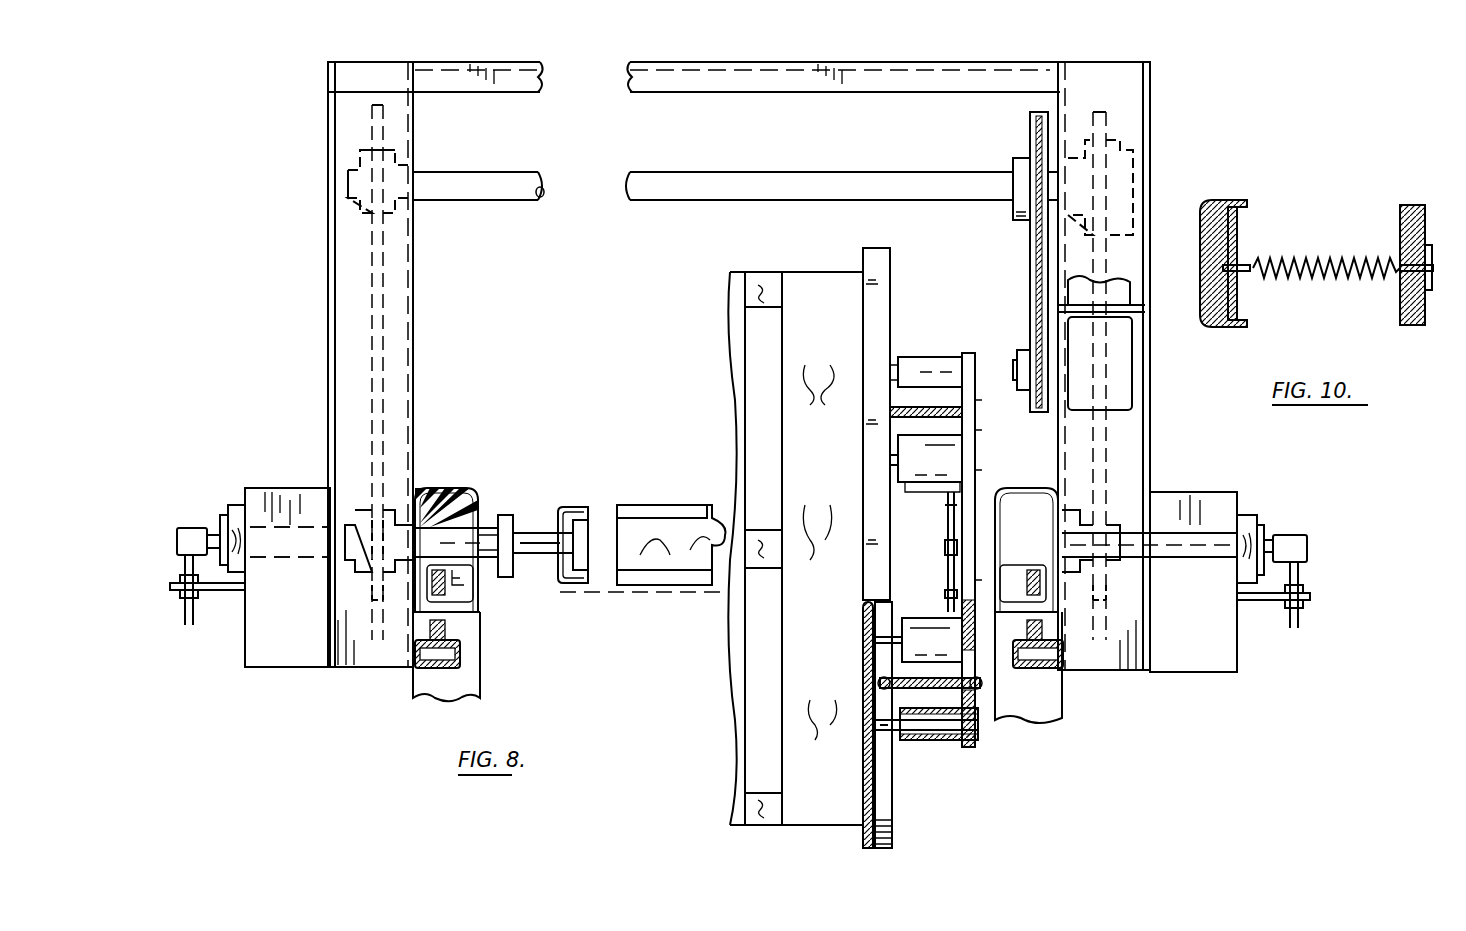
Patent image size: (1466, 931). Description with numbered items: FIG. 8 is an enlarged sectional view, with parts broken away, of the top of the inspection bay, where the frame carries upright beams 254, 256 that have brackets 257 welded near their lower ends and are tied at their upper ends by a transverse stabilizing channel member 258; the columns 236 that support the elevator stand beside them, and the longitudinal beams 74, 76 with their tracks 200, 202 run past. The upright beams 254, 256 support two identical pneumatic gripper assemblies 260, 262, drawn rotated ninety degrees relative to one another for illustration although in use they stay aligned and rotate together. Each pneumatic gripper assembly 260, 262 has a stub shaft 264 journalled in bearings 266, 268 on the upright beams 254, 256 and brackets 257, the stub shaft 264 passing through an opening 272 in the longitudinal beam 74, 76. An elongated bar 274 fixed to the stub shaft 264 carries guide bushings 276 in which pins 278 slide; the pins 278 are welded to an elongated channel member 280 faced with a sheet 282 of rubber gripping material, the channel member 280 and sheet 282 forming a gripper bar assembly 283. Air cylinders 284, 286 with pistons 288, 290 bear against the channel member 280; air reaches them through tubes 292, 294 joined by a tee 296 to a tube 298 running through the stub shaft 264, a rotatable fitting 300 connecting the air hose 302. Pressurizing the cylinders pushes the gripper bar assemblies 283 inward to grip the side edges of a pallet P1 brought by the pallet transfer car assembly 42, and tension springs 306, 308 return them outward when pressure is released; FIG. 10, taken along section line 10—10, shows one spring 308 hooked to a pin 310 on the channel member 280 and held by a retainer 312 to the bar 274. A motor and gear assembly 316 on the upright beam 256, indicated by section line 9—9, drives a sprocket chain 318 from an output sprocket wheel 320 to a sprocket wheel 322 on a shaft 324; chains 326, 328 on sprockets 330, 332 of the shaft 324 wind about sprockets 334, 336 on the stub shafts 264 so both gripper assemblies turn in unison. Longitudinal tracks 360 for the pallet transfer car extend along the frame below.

In FIG. 8, the section line 9— 9 is at (863, 70).
In FIG. 8, the section line 10— 10 is at (820, 682).
In FIG. 8, the pallet transfer car assembly 42 is at (636, 600).
In FIG. 8, the horizontally-extending beam 74 is at (470, 490).
In FIG. 8, the horizontally-extending beam 76 is at (1035, 490).
In FIG. 8, the track 200 is at (430, 612).
In FIG. 8, the track 202 is at (1042, 588).
In FIG. 8, the column 236 is at (432, 698).
In FIG. 8, the upright beam 254 is at (340, 320).
In FIG. 8, the upright beam 256 is at (1150, 435).
In FIG. 8, the bracket 257 is at (275, 490).
In FIG. 8, the transverse stabilizing channel member 258 is at (632, 72).
In FIG. 8, the pneumatic gripper assembly 260 is at (530, 486).
In FIG. 8, the pneumatic gripper assembly 262 is at (968, 342).
In FIG. 8, the stub shaft 264 is at (282, 563).
In FIG. 8, the bearing 266 is at (236, 505).
In FIG. 8, the bearing 268 is at (398, 485).
In FIG. 8, the opening 272 is at (476, 510).
In FIG. 8, the elongated bar 274 is at (505, 560).
In FIG. 10, the elongated bar 274 is at (1420, 205).
In FIG. 8, the guide bushing 276 is at (527, 560).
In FIG. 8, the pin 278 is at (890, 360).
In FIG. 8, the elongated channel member 280 is at (548, 560).
In FIG. 10, the elongated channel member 280 is at (1247, 212).
In FIG. 8, the sheet of gripping material 282 is at (572, 506).
In FIG. 10, the sheet of gripping material 282 is at (1205, 205).
In FIG. 8, the gripper bar assembly 283 is at (592, 507).
In FIG. 8, the air cylinder 284 is at (900, 470).
In FIG. 8, the air cylinder 286 is at (920, 620).
In FIG. 8, the piston 288 is at (893, 462).
In FIG. 8, the piston 290 is at (878, 640).
In FIG. 8, the tube 292 is at (948, 518).
In FIG. 8, the tube 294 is at (948, 590).
In FIG. 8, the tee 296 is at (935, 550).
In FIG. 8, the tube 298 is at (1195, 545).
In FIG. 8, the fitting 300 is at (195, 528).
In FIG. 8, the air hose 302 is at (178, 585).
In FIG. 8, the tension spring 306 is at (888, 412).
In FIG. 8, the tension spring 308 is at (880, 680).
In FIG. 10, the tension spring 308 is at (1330, 282).
In FIG. 10, the pin 310 is at (1240, 305).
In FIG. 10, the retainer 312 is at (1432, 292).
In FIG. 8, the motor and gear assembly 316 is at (1132, 360).
In FIG. 8, the sprocket chain 318 is at (1030, 240).
In FIG. 8, the output sprocket wheel 320 is at (1020, 392).
In FIG. 8, the sprocket wheel 322 is at (1022, 158).
In FIG. 8, the shaft 324 is at (628, 175).
In FIG. 8, the chain 326 is at (372, 245).
In FIG. 8, the chain 328 is at (1108, 265).
In FIG. 8, the sprocket 330 is at (370, 152).
In FIG. 8, the sprocket 332 is at (1130, 140).
In FIG. 8, the sprocket 334 is at (368, 575).
In FIG. 8, the sprocket 336 is at (1120, 515).
In FIG. 8, the longitudinal track 360 is at (455, 655).
In FIG. 8, the pallet P1 is at (690, 518).